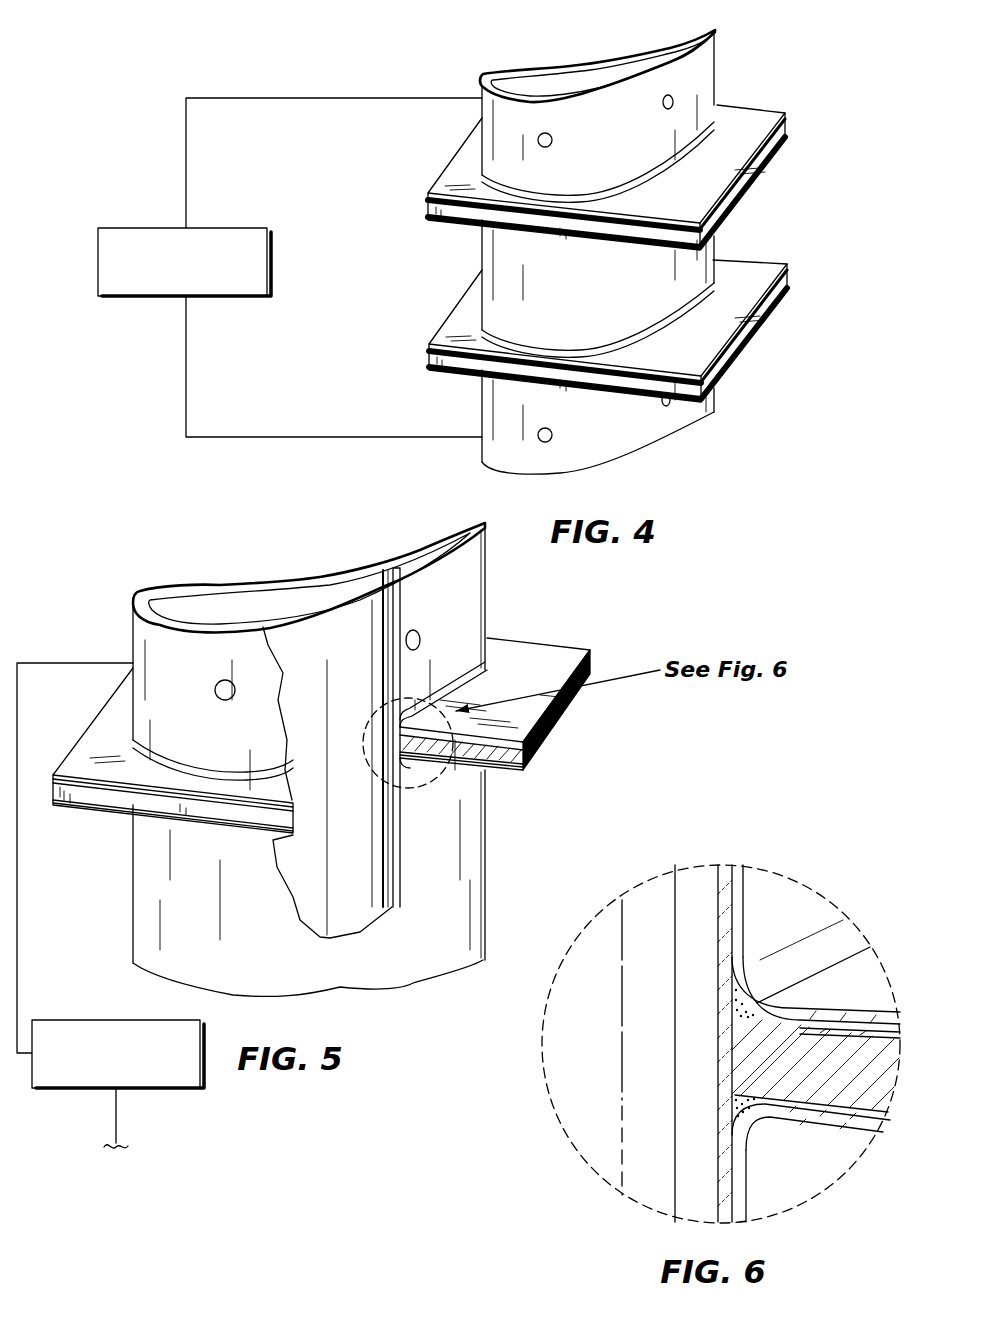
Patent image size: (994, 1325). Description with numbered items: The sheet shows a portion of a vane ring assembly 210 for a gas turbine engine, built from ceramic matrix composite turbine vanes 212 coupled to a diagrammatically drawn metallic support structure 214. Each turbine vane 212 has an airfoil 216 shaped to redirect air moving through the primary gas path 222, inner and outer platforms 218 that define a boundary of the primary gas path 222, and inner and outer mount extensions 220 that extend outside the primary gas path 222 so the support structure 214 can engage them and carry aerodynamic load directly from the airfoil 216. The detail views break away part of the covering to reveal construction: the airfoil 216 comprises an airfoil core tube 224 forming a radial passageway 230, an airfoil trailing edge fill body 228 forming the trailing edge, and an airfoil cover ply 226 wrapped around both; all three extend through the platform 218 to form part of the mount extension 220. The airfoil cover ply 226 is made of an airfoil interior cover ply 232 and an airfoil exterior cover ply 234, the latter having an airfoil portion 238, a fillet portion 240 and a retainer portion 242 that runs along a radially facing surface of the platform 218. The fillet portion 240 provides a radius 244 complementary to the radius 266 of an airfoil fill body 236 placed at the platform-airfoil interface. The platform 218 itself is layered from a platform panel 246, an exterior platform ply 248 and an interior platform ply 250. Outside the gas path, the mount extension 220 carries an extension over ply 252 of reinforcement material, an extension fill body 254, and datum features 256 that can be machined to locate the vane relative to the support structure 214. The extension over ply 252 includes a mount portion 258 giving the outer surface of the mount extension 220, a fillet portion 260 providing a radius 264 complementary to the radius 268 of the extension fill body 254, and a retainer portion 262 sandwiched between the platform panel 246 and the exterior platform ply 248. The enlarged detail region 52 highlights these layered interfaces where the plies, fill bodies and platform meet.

In FIG. 6, the bonded joint region 52 is at (902, 898).
In FIG. 4, the vane ring assembly 210 is at (815, 76).
In FIG. 4, the turbine vane 212 is at (818, 122).
In FIG. 4, the support structure 214 is at (140, 228).
In FIG. 5, the support structure 214 is at (72, 1020).
In FIG. 4, the airfoil 216 is at (733, 243).
In FIG. 5, the airfoil 216 is at (130, 874).
In FIG. 4, the platform 218 is at (780, 152).
In FIG. 5, the platform 218 is at (55, 770).
In FIG. 4, the mount extension 220 is at (728, 55).
In FIG. 5, the mount extension 220 is at (283, 577).
In FIG. 4, the primary gas path 222 is at (368, 294).
In FIG. 5, the primary gas path 222 is at (76, 942).
In FIG. 4, the airfoil core tube 224 is at (590, 80).
In FIG. 5, the airfoil core tube 224 is at (343, 633).
In FIG. 6, the airfoil core tube 224 is at (642, 917).
In FIG. 4, the airfoil cover ply 226 is at (705, 268).
In FIG. 5, the airfoil cover ply 226 is at (407, 1024).
In FIG. 4, the airfoil trailing edge fill body 228 is at (656, 62).
In FIG. 5, the airfoil trailing edge fill body 228 is at (396, 567).
In FIG. 6, the airfoil trailing edge fill body 228 is at (684, 885).
In FIG. 4, the passageway 230 is at (558, 83).
In FIG. 5, the passageway 230 is at (250, 606).
In FIG. 5, the airfoil interior cover ply 232 is at (407, 886).
In FIG. 6, the airfoil interior cover ply 232 is at (737, 1230).
In FIG. 5, the airfoil exterior cover ply 234 is at (437, 1000).
In FIG. 6, the airfoil exterior cover ply 234 is at (910, 1208).
In FIG. 6, the airfoil fill body 236 is at (730, 1123).
In FIG. 6, the airfoil portion 238 is at (750, 1197).
In FIG. 6, the fillet portion 240 is at (868, 1273).
In FIG. 6, the retainer portion 242 is at (763, 1133).
In FIG. 6, the radius 244 is at (730, 1190).
In FIG. 5, the platform panel 246 is at (512, 770).
In FIG. 6, the platform panel 246 is at (863, 1077).
In FIG. 5, the exterior platform ply 248 is at (532, 705).
In FIG. 6, the exterior platform ply 248 is at (840, 1027).
In FIG. 5, the interior platform ply 250 is at (518, 778).
In FIG. 6, the interior platform ply 250 is at (817, 1130).
In FIG. 4, the extension over ply 252 is at (686, 124).
In FIG. 5, the extension over ply 252 is at (432, 590).
In FIG. 6, the extension fill body 254 is at (735, 1010).
In FIG. 4, the datum features 256 is at (662, 104).
In FIG. 5, the datum features 256 is at (214, 690).
In FIG. 6, the mount portion 258 is at (745, 905).
In FIG. 6, the fillet portion 260 is at (817, 957).
In FIG. 6, the retainer portion 262 is at (870, 947).
In FIG. 6, the radius 264 is at (757, 1000).
In FIG. 6, the radius 266 is at (735, 1106).
In FIG. 6, the radius 268 is at (735, 1010).